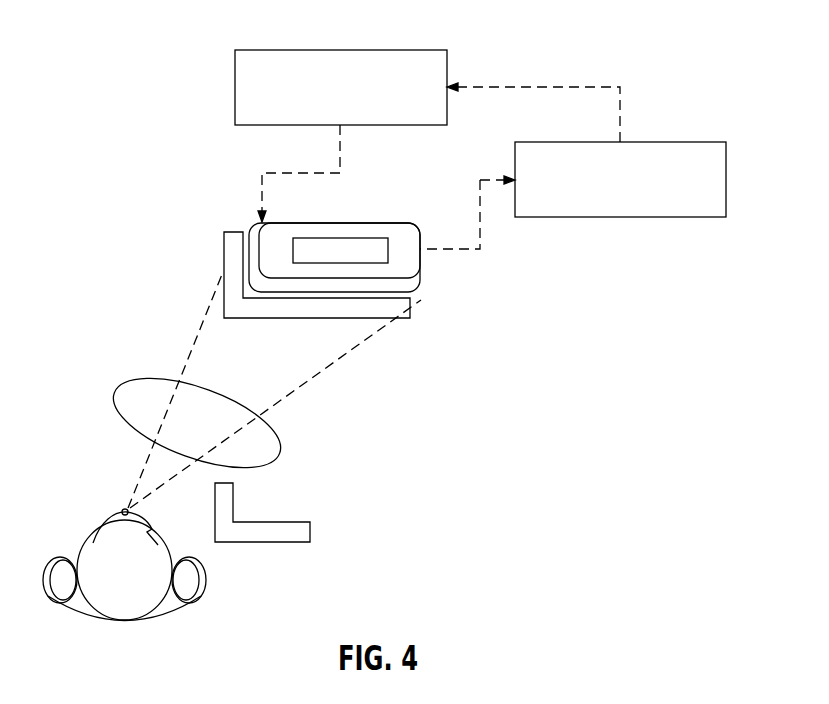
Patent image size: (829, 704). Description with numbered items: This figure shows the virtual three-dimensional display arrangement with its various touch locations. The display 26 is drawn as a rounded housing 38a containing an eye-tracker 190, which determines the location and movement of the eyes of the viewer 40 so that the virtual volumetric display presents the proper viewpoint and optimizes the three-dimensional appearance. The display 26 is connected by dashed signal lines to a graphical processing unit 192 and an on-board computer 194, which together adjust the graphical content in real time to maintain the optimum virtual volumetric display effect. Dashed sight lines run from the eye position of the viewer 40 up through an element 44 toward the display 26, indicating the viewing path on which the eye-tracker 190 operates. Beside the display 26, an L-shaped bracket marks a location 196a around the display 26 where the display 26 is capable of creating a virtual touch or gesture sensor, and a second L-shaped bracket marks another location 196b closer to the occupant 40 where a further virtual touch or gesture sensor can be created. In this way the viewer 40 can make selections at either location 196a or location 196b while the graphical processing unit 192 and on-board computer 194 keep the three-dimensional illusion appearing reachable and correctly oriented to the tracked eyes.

The graphical processing unit 192 is at (293, 49).
The on-board computer 194 is at (668, 142).
The display housing 38a is at (255, 232).
The display 26 is at (410, 290).
The eye-tracker 190 is at (362, 238).
The location 196a is at (258, 320).
The location 196b is at (250, 542).
The lens 44 is at (148, 376).
The viewer 40 is at (70, 557).